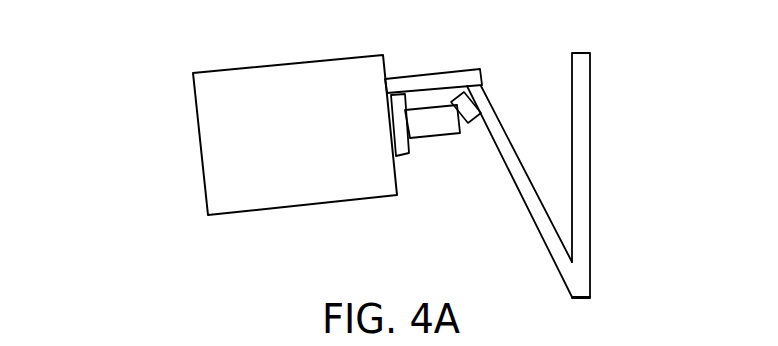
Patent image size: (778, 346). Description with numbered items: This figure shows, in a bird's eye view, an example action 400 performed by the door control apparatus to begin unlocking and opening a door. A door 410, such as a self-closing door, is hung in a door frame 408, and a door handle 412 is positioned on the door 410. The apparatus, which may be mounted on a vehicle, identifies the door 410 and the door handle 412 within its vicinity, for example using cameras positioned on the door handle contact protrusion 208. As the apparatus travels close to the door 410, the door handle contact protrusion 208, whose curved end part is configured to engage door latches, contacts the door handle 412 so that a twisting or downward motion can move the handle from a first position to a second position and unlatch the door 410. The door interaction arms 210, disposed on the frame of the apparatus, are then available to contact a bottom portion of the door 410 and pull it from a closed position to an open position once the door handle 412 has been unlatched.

The example action 400 is at (228, 108).
The door interaction arm 210 is at (437, 68).
The door handle contact protrusion 208 is at (446, 138).
The door handle 412 is at (470, 116).
The door 410 is at (555, 270).
The door frame 408 is at (590, 152).